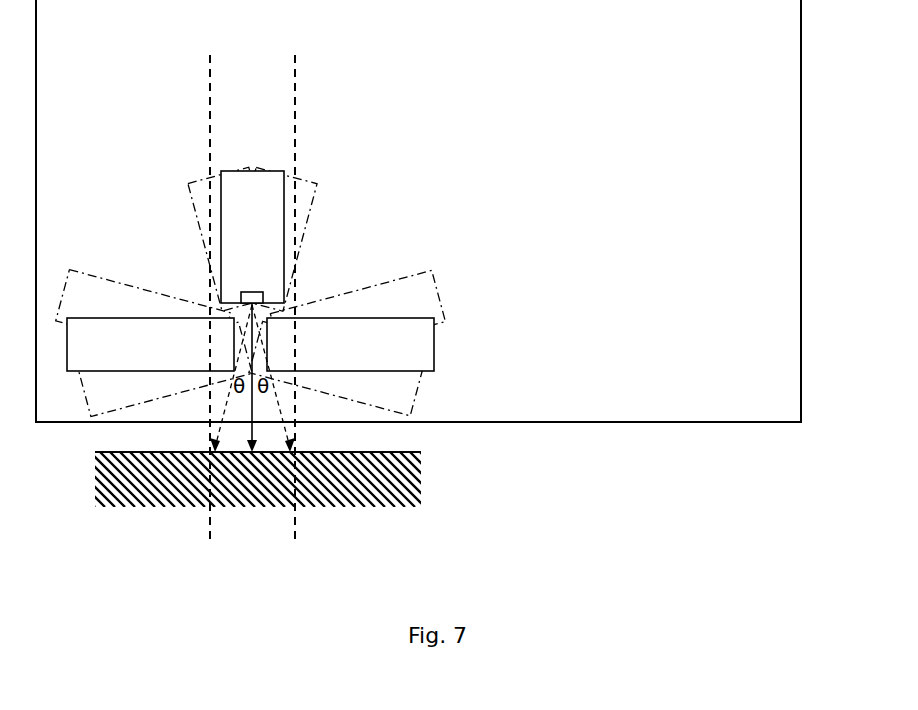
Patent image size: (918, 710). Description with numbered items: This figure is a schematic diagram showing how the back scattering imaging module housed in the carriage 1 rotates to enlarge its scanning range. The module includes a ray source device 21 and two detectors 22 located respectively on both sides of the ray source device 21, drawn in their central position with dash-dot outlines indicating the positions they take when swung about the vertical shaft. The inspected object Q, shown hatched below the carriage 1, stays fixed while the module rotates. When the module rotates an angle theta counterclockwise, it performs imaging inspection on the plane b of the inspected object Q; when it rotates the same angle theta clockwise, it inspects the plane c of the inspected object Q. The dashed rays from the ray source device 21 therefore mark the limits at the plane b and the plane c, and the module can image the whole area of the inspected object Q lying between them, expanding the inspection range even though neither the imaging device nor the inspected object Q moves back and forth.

The carriage 1 is at (753, 212).
The ray source device 21 is at (266, 186).
The detector 22 is at (105, 327).
The inspected object Q is at (421, 473).
The plane b is at (295, 314).
The plane c is at (210, 314).